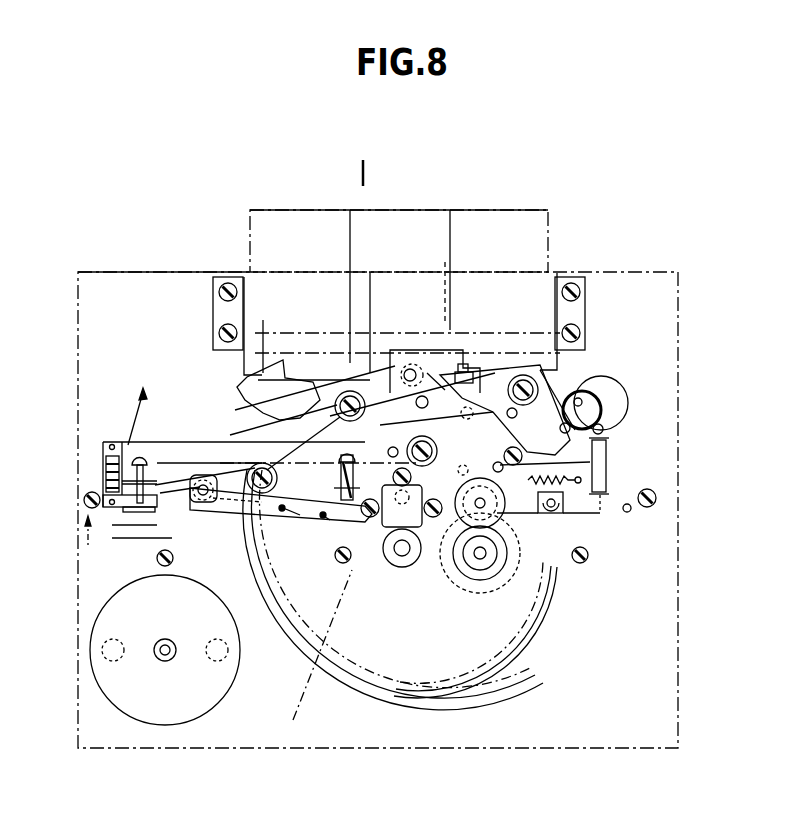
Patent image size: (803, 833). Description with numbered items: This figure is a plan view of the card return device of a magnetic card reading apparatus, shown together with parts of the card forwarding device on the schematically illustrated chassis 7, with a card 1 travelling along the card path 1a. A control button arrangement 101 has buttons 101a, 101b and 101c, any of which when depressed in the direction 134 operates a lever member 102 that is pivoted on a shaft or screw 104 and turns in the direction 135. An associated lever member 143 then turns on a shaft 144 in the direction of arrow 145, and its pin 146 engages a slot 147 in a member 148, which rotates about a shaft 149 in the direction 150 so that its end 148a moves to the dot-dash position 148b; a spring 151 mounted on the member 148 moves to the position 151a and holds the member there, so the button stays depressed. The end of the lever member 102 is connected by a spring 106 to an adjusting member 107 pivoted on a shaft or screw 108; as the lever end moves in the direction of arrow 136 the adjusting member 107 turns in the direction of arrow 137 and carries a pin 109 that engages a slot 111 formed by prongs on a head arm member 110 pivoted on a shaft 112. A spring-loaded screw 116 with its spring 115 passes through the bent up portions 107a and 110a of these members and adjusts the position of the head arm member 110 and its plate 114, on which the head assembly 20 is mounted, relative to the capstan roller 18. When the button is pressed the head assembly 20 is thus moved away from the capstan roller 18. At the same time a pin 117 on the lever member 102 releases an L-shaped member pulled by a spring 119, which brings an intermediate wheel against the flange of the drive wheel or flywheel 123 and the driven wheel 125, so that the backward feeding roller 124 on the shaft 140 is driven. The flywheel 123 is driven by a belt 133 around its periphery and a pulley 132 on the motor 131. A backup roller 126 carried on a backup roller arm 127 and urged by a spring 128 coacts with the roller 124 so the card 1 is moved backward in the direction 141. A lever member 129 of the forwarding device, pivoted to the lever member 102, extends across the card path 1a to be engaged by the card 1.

The card 1 is at (665, 527).
The card path 1a is at (132, 533).
The chassis 7 is at (173, 273).
The capstan roller 18 is at (402, 568).
The head assembly 20 is at (398, 565).
The control button arrangement 101 is at (275, 228).
The button 101a is at (306, 210).
The button 101b is at (390, 210).
The button 101c is at (484, 210).
The lever member 102 is at (225, 477).
The shaft or screw 104 is at (260, 473).
The spring 106 is at (105, 471).
The adjusting member 107 is at (173, 447).
The bent up portion 107a is at (267, 373).
The shaft or screw 108 is at (462, 365).
The pin 109 is at (322, 516).
The head arm member 110 is at (338, 512).
The bent up portion 110a is at (302, 525).
The slot 111 is at (283, 510).
The shaft 112 is at (500, 465).
The plate 114 is at (480, 557).
The spring 115 is at (348, 498).
The spring-loaded screw 116 is at (355, 415).
The pin 117 is at (415, 312).
The spring 119 is at (547, 463).
The drive wheel or flywheel 123 is at (503, 690).
The backward feeding roller 124 is at (480, 570).
The driven wheel 125 is at (520, 583).
The backup roller 126 is at (497, 523).
The backup roller arm 127 is at (590, 510).
The spring 128 is at (610, 442).
The lever member 129 is at (283, 510).
The motor 131 is at (172, 730).
The pulley 132 is at (235, 520).
The belt 133 is at (280, 567).
The direction of depression 134 is at (366, 165).
The direction of rotation 135 is at (262, 463).
The arrow 136 is at (88, 528).
The arrow 137 is at (132, 423).
The shaft 140 is at (487, 577).
The direction of backward movement 141 is at (670, 479).
The lever member 143 is at (320, 400).
The shaft 144 is at (347, 395).
The arrow 145 is at (363, 395).
The pin 146 is at (480, 356).
The slot 147 is at (466, 366).
The member 148 is at (500, 355).
The end 148a is at (565, 412).
The position 148b is at (563, 388).
The shaft 149 is at (560, 365).
The direction 150 is at (563, 370).
The spring 151 is at (602, 412).
The position 151a is at (608, 405).